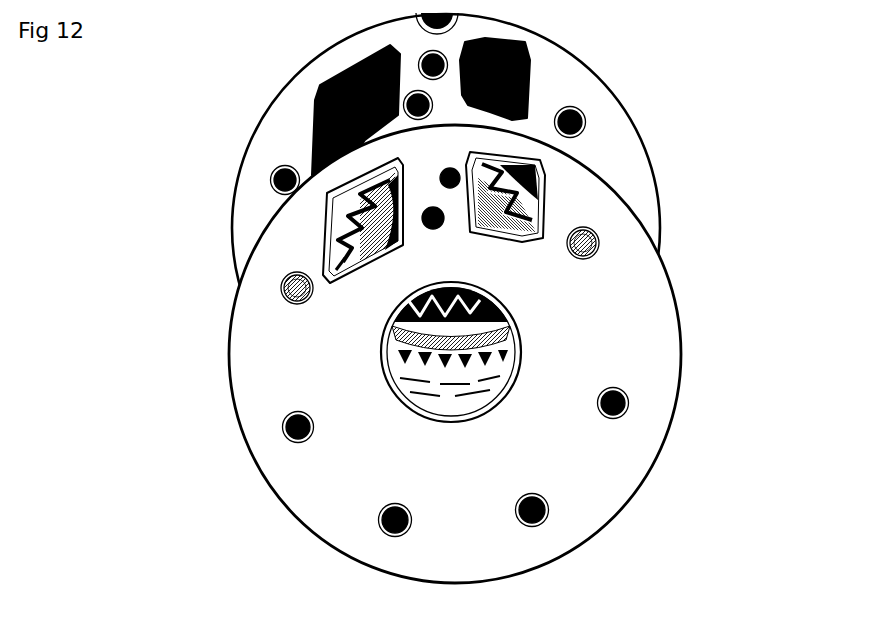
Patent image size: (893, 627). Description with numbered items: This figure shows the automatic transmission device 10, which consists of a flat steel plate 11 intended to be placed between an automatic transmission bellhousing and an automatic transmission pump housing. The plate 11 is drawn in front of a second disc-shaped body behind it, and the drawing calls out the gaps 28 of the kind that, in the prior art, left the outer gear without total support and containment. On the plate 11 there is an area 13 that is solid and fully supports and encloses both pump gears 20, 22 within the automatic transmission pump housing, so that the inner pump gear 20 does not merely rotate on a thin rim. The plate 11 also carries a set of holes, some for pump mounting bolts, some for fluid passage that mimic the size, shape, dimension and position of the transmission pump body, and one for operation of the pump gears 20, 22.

The automatic transmission device 10 is at (469, 297).
The flat steel plate 11 is at (260, 388).
The gaps 28 is at (622, 98).
The solid area on the plate 13 is at (382, 293).
The inner pump gear 20 is at (522, 227).
The pump gear 22 is at (522, 170).